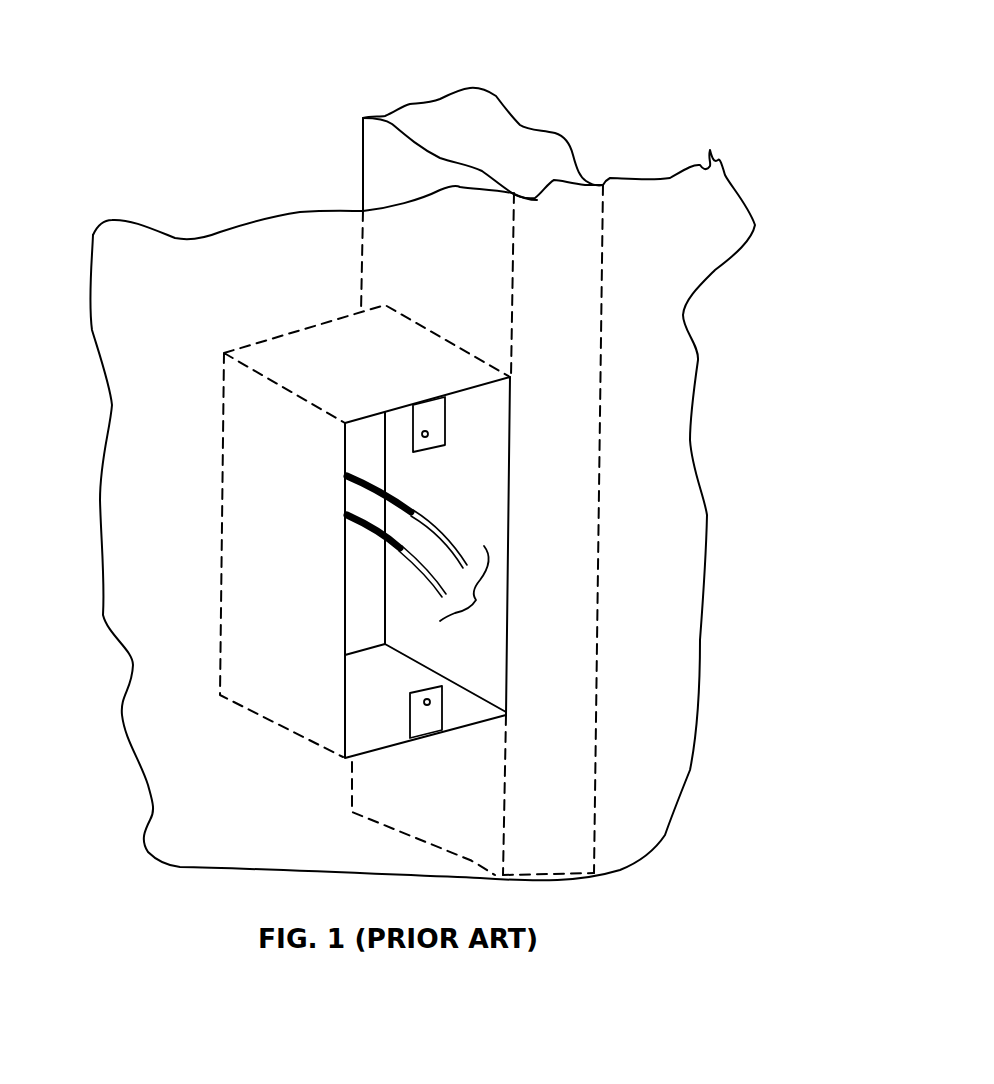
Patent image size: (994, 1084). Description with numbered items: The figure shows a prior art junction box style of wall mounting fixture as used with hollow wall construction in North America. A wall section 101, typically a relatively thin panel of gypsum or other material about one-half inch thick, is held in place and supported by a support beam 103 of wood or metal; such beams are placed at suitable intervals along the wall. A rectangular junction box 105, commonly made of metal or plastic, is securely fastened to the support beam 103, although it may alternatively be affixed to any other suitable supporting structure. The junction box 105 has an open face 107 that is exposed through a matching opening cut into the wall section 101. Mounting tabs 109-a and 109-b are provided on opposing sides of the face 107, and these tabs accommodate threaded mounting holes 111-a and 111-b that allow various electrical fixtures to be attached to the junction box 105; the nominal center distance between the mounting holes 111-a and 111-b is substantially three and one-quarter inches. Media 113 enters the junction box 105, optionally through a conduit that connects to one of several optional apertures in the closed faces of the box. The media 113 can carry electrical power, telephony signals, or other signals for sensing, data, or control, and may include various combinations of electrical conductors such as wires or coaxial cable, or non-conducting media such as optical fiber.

The wall section 101 is at (645, 222).
The support beam 103 is at (500, 152).
The junction box 105 is at (320, 355).
The open face 107 is at (342, 563).
The mounting tab 109-a is at (428, 417).
The mounting tab 109-b is at (430, 718).
The threaded mounting hole 111-a is at (437, 434).
The threaded mounting hole 111-b is at (435, 699).
The media 113 is at (480, 600).